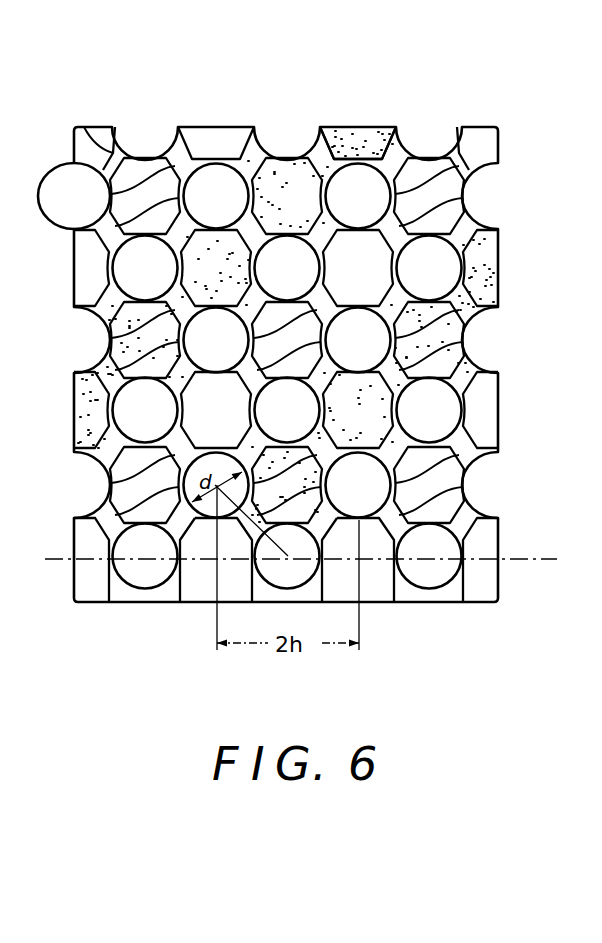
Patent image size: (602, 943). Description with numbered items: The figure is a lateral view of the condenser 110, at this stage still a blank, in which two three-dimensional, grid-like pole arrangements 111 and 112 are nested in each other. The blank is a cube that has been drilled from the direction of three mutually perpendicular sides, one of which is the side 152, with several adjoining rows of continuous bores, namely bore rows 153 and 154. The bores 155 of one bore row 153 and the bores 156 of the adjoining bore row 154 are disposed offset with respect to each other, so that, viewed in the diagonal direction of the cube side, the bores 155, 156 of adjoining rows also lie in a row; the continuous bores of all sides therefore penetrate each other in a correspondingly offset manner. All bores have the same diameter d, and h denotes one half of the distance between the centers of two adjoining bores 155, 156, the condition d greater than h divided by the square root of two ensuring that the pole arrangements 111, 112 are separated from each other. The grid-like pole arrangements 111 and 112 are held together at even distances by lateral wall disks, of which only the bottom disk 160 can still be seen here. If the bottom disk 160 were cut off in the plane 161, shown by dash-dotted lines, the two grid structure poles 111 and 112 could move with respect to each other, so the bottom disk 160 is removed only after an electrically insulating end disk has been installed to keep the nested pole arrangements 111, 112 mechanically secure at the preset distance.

The condenser 110 is at (505, 113).
The pole arrangement 111 is at (84, 122).
The pole arrangement 112 is at (352, 124).
The side 152 is at (228, 120).
The bore row 153 is at (101, 174).
The bore row 154 is at (141, 419).
The bore 155 is at (213, 185).
The bore 156 is at (365, 192).
The bottom disk 160 is at (92, 593).
The plane 161 is at (540, 559).